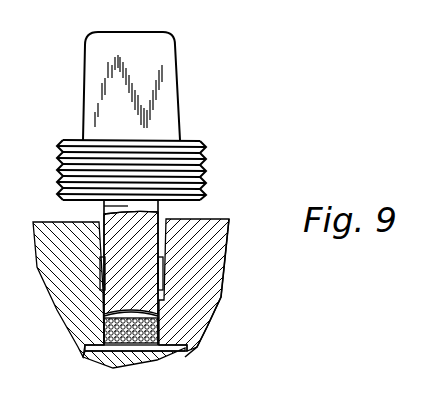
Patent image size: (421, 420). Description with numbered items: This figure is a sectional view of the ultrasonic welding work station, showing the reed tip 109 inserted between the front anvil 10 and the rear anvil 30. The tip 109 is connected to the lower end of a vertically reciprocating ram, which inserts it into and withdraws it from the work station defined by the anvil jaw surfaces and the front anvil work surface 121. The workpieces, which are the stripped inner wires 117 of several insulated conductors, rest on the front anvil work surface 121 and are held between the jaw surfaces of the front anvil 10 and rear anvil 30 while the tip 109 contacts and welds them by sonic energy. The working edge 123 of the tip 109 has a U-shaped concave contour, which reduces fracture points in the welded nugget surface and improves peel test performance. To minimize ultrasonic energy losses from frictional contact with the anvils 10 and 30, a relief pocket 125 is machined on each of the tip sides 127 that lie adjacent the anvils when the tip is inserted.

The front anvil 10 is at (43, 218).
The rear anvil 30 is at (226, 290).
The reed tip 109 is at (166, 237).
The inner wires 117 is at (182, 351).
The front anvil work surface 121 is at (165, 343).
The working edge 123 is at (115, 357).
The relief pocket 125 is at (101, 275).
The tip sides 127 is at (93, 241).